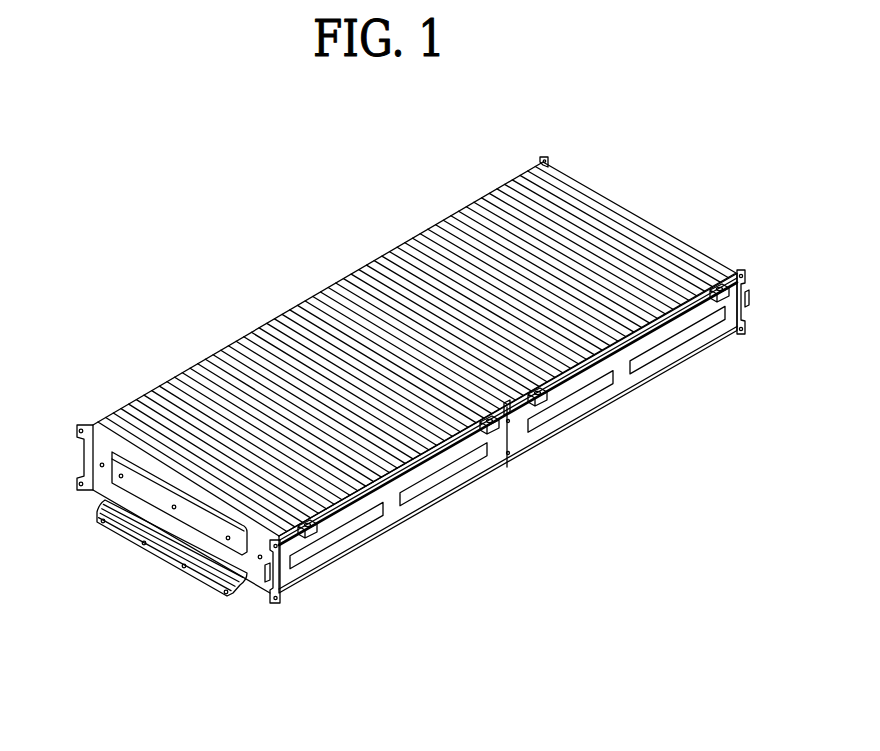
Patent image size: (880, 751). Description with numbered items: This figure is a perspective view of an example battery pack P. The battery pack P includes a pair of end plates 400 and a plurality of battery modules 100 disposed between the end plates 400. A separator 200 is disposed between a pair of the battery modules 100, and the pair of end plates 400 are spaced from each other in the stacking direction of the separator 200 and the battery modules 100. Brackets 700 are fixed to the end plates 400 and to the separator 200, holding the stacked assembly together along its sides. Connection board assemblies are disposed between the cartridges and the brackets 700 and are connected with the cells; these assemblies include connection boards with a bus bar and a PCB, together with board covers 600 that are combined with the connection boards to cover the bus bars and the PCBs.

The battery pack P is at (678, 169).
The battery module 100 is at (498, 207).
The separator 200 is at (325, 297).
The end plate 400 is at (80, 427).
The board cover 600 is at (675, 312).
The bracket 700 is at (652, 368).